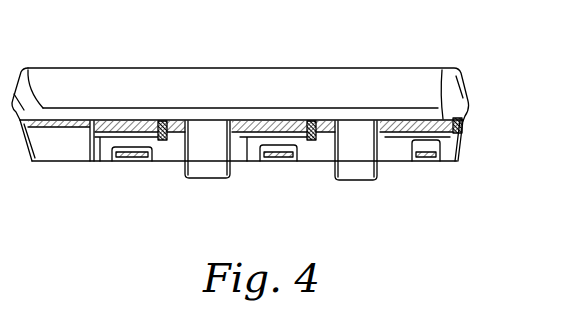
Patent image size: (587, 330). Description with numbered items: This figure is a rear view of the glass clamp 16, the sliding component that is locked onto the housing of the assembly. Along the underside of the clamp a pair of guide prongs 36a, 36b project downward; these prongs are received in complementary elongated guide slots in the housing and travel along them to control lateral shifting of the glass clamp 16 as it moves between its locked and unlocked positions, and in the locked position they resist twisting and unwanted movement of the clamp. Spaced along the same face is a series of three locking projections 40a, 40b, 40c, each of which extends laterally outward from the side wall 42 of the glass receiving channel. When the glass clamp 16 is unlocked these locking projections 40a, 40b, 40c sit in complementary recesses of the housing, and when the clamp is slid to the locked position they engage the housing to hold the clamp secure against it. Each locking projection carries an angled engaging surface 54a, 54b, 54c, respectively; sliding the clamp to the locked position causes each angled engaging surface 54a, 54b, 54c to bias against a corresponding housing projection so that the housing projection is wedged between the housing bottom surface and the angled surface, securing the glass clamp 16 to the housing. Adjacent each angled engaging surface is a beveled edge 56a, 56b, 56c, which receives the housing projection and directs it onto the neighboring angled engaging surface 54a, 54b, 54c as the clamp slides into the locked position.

The glass clamp 16 is at (232, 66).
The guide prong 36a is at (222, 176).
The guide prong 36b is at (372, 168).
The locking projection 40a is at (450, 153).
The locking projection 40b is at (300, 157).
The locking projection 40c is at (100, 157).
The side wall 42 is at (53, 148).
The angled engaging surface 54a is at (427, 127).
The angled engaging surface 54b is at (278, 123).
The angled engaging surface 54c is at (127, 130).
The beveled edge 56a is at (463, 124).
The beveled edge 56b is at (313, 125).
The beveled edge 56c is at (163, 125).